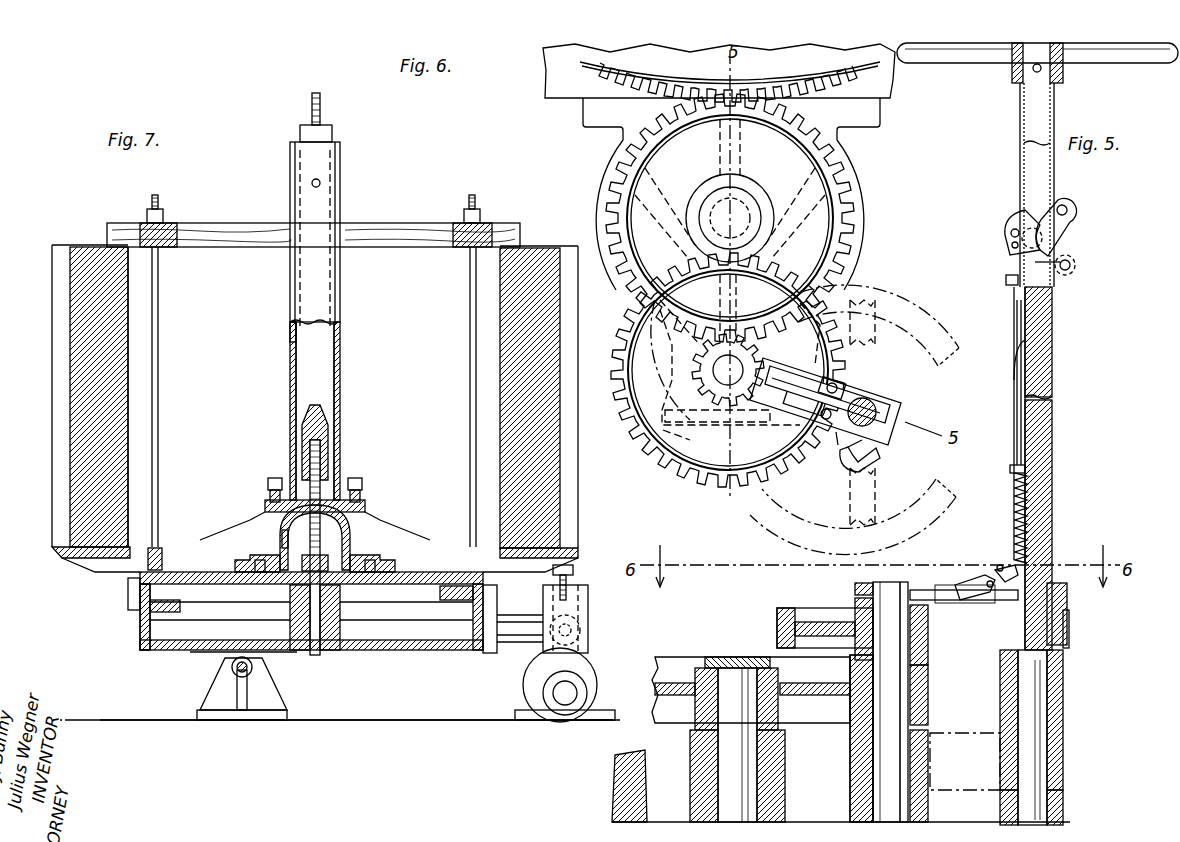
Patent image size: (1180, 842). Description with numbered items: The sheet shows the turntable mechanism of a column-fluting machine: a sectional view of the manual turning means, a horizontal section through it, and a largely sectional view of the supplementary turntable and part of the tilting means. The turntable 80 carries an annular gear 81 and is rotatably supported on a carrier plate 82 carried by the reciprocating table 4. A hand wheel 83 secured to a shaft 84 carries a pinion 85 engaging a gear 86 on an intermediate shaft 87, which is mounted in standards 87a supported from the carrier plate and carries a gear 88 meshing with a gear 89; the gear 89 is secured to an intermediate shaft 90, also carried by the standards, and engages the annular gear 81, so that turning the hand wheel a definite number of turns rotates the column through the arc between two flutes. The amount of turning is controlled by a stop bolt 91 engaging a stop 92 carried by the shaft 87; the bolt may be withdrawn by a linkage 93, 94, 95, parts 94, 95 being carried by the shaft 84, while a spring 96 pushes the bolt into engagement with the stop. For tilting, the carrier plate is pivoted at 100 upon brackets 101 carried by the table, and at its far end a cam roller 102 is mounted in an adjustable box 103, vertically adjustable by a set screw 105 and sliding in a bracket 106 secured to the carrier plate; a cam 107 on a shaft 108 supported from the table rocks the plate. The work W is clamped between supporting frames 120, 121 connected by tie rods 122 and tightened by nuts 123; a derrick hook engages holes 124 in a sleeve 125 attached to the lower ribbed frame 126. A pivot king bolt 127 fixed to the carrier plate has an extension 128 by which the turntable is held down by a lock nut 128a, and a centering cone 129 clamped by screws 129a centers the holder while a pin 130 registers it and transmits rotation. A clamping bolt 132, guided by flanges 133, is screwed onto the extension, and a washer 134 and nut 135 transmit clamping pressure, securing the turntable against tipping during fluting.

In FIG. 7, the work W is at (52, 335).
In FIG. 7, the table 4 is at (412, 720).
In FIG. 7, the turntable 80 is at (150, 607).
In FIG. 7, the annular gear 81 is at (128, 593).
In FIG. 6, the annular gear 81 is at (585, 78).
In FIG. 7, the carrier plate 82 is at (143, 650).
In FIG. 6, the carrier plate 82 is at (893, 92).
In FIG. 6, the hand wheel 83 is at (890, 292).
In FIG. 5, the hand wheel 83 is at (1150, 52).
In FIG. 6, the shaft 84 is at (880, 398).
In FIG. 5, the shaft 84 is at (1045, 416).
In FIG. 6, the pinion 85 is at (848, 456).
In FIG. 5, the pinion 85 is at (1068, 620).
In FIG. 6, the gear 86 is at (667, 468).
In FIG. 5, the gear 86 is at (777, 625).
In FIG. 6, the intermediate shaft 87 is at (700, 370).
In FIG. 5, the intermediate shaft 87 is at (876, 582).
In FIG. 6, the standards 87a is at (843, 144).
In FIG. 5, the standards 87a is at (841, 738).
In FIG. 6, the gear 88 is at (690, 347).
In FIG. 5, the gear 88 is at (928, 705).
In FIG. 6, the gear 89 is at (606, 190).
In FIG. 5, the gear 89 is at (663, 668).
In FIG. 6, the intermediate shaft 90 is at (745, 205).
In FIG. 5, the intermediate shaft 90 is at (737, 745).
In FIG. 6, the stop bolt 91 is at (772, 378).
In FIG. 5, the stop bolt 91 is at (948, 605).
In FIG. 6, the stop 92 is at (768, 367).
In FIG. 5, the stop 92 is at (960, 585).
In FIG. 5, the linkage 93 is at (996, 572).
In FIG. 5, the linkage 94 is at (1014, 456).
In FIG. 5, the linkage 95 is at (1045, 215).
In FIG. 5, the spring 96 is at (1015, 520).
In FIG. 7, the pivot 100 is at (232, 670).
In FIG. 7, the brackets 101 is at (270, 692).
In FIG. 7, the cam roller 102 is at (588, 620).
In FIG. 7, the adjustable box 103 is at (578, 605).
In FIG. 7, the set screw 105 is at (570, 570).
In FIG. 7, the bracket 106 is at (545, 612).
In FIG. 7, the cam 107 is at (523, 685).
In FIG. 7, the shaft 108 is at (572, 690).
In FIG. 7, the supporting frame 120 is at (162, 548).
In FIG. 7, the supporting frame 121 is at (248, 234).
In FIG. 7, the tie rods 122 is at (158, 384).
In FIG. 7, the nuts 123 is at (148, 212).
In FIG. 7, the holes 124 is at (322, 183).
In FIG. 7, the sleeve 125 is at (340, 326).
In FIG. 7, the lower ribbed frame 126 is at (267, 520).
In FIG. 7, the pivot king bolt 127 is at (315, 640).
In FIG. 7, the extension 128 is at (350, 540).
In FIG. 7, the lock nut 128a is at (282, 538).
In FIG. 7, the centering cone 129 is at (362, 508).
In FIG. 7, the screws 129a is at (252, 564).
In FIG. 7, the pin 130 is at (195, 584).
In FIG. 7, the clamping bolt 132 is at (296, 348).
In FIG. 7, the flanges 133 is at (340, 470).
In FIG. 7, the washer 134 is at (332, 140).
In FIG. 7, the nut 135 is at (322, 118).